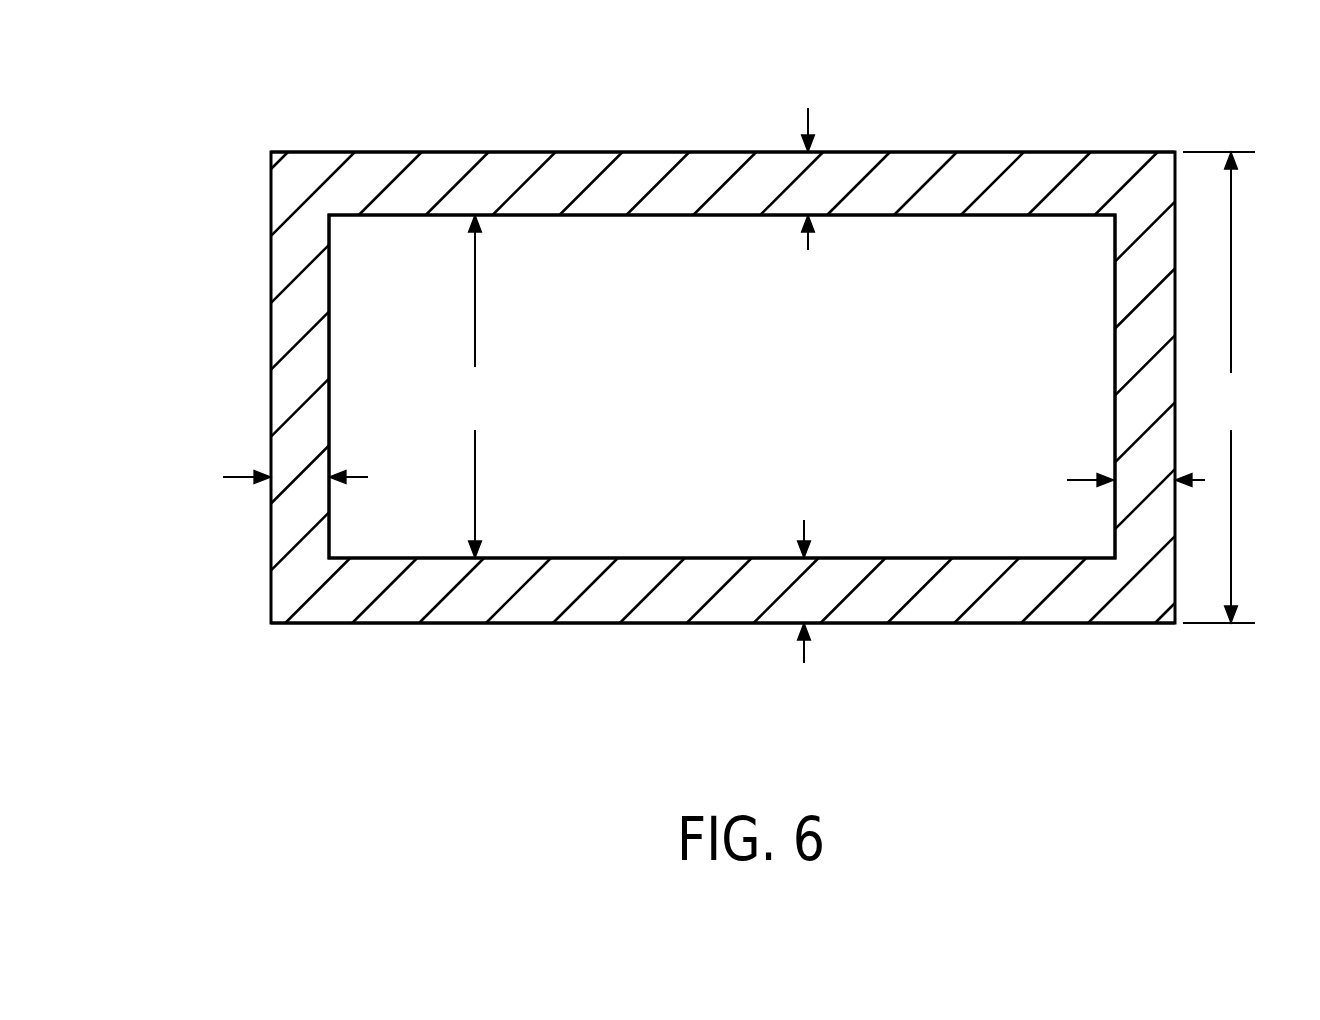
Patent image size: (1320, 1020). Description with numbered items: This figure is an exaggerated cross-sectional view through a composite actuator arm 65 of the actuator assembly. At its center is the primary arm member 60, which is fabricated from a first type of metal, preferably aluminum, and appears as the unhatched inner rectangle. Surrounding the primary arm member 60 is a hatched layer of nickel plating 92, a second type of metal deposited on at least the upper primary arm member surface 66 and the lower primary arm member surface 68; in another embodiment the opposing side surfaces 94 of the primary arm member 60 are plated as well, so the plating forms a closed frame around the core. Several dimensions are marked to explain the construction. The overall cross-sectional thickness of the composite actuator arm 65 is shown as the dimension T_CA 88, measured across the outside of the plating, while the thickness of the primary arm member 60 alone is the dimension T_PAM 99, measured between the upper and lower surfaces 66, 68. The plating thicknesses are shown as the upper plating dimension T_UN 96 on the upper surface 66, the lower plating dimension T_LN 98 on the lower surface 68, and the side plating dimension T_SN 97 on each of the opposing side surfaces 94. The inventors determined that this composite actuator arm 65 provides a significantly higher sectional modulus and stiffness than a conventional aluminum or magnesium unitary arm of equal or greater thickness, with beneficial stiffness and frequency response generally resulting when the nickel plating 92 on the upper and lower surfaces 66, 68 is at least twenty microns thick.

The primary arm member 60 is at (737, 393).
The composite actuator arm 65 is at (444, 126).
The upper primary arm member surface 66 is at (905, 216).
The lower primary arm member surface 68 is at (899, 558).
The total cross-sectional thickness dimension T_CA 88 is at (1247, 397).
The nickel plating 92 is at (622, 151).
The opposing side surfaces 94 is at (329, 365).
The upper surface plating dimension T_UN 96 is at (822, 151).
The side surface plating dimension T_SN 97 is at (268, 462).
The lower surface plating dimension T_LN 98 is at (815, 624).
The primary arm member thickness dimension T_PAM 99 is at (482, 382).